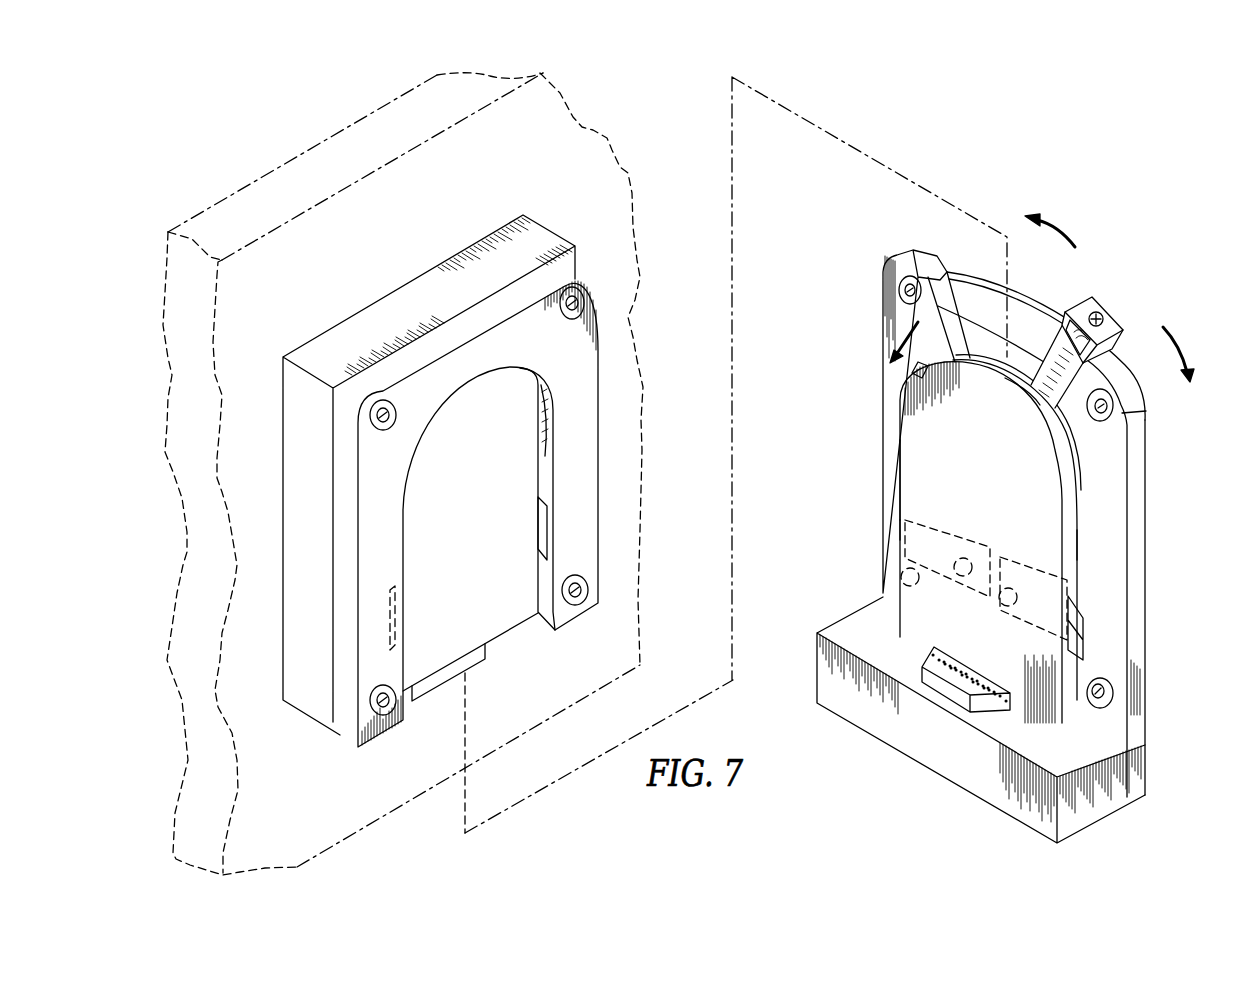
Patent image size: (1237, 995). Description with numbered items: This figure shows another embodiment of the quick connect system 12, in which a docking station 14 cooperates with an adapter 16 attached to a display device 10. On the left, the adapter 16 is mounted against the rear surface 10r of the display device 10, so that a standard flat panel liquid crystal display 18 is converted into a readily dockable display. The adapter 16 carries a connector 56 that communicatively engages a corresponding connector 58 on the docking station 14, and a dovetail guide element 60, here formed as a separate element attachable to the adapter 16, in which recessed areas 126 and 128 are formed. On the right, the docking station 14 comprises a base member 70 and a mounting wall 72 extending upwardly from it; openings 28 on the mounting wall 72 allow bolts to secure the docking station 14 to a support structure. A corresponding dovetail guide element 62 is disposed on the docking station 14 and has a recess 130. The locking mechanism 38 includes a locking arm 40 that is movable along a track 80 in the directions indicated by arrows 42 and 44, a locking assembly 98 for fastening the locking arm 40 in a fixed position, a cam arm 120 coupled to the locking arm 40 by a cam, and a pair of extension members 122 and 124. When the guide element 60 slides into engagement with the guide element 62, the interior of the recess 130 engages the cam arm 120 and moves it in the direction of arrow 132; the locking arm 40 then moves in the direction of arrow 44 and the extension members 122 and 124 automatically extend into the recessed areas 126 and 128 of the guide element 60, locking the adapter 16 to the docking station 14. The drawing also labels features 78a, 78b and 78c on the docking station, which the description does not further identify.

The display device 10 is at (332, 124).
The rear surface 10r is at (553, 131).
The quick connect system 12 is at (817, 410).
The docking station 14 is at (1143, 457).
The adapter 16 is at (468, 260).
The flat panel liquid crystal display 18 is at (243, 205).
The openings 28 is at (893, 297).
The locking mechanism 38 is at (1130, 296).
The locking arm 40 is at (1095, 300).
The direction arrow 42 is at (1182, 326).
The direction arrow 44 is at (1060, 223).
The connector 56 is at (480, 656).
The connector 58 is at (947, 693).
The guide element 60 is at (574, 453).
The guide element 62 is at (899, 444).
The base member 70 is at (1097, 807).
The mounting wall 72 is at (1135, 710).
The first edge 78a is at (900, 517).
The second edge 78b is at (1067, 545).
The arch edge 78c is at (1020, 395).
The track 80 is at (1018, 300).
The locking assembly 98 is at (1066, 326).
The cam arm 120 is at (893, 372).
The extension member 122 is at (950, 540).
The extension member 124 is at (1083, 643).
The recessed area 126 is at (544, 525).
The recessed area 128 is at (397, 618).
The recess 130 is at (545, 432).
The direction arrow 132 is at (905, 328).